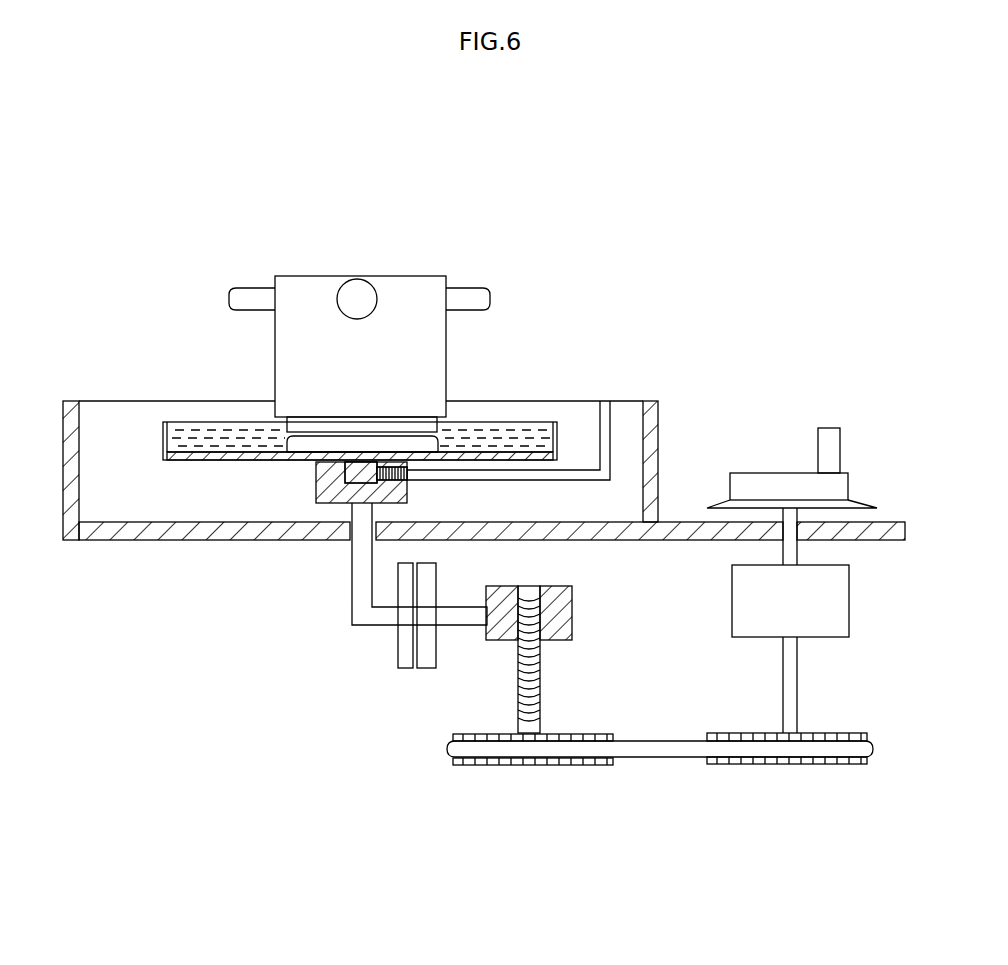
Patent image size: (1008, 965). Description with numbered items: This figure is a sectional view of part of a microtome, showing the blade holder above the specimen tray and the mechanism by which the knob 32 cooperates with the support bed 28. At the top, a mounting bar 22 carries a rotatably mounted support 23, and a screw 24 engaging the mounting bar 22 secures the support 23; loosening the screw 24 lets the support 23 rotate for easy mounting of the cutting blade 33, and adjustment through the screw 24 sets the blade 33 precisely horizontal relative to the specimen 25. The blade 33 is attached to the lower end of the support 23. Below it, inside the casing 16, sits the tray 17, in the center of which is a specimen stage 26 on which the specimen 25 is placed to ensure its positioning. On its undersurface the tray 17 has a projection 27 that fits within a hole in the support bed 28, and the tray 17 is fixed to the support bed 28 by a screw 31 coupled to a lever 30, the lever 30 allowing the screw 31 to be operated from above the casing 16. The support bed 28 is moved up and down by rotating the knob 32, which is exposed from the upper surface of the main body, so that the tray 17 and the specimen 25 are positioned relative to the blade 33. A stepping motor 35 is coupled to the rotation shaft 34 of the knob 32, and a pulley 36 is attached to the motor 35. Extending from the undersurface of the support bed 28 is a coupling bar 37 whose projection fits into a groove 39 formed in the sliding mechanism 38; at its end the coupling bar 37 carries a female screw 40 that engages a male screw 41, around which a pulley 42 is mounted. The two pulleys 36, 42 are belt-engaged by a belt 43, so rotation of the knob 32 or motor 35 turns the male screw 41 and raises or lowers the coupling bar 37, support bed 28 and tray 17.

The casing 16 is at (82, 403).
The tray 17 is at (187, 452).
The mounting bar 22 is at (248, 292).
The support 23 is at (433, 290).
The screw 24 is at (350, 290).
The specimen 25 is at (440, 436).
The specimen stage 26 is at (303, 448).
The projection 27 is at (347, 483).
The support bed 28 is at (392, 482).
The lever 30 is at (613, 401).
The screw 31 is at (418, 455).
The knob 32 is at (745, 478).
The cutting blade 33 is at (307, 422).
The rotation shaft 34 is at (798, 545).
The stepping motor 35 is at (850, 616).
The pulley 36 is at (858, 733).
The coupling bar 37 is at (360, 612).
The sliding mechanism 38 is at (405, 668).
The groove 39 is at (420, 668).
The female screw 40 is at (572, 618).
The male screw 41 is at (542, 694).
The pulley 42 is at (540, 765).
The belt 43 is at (665, 758).